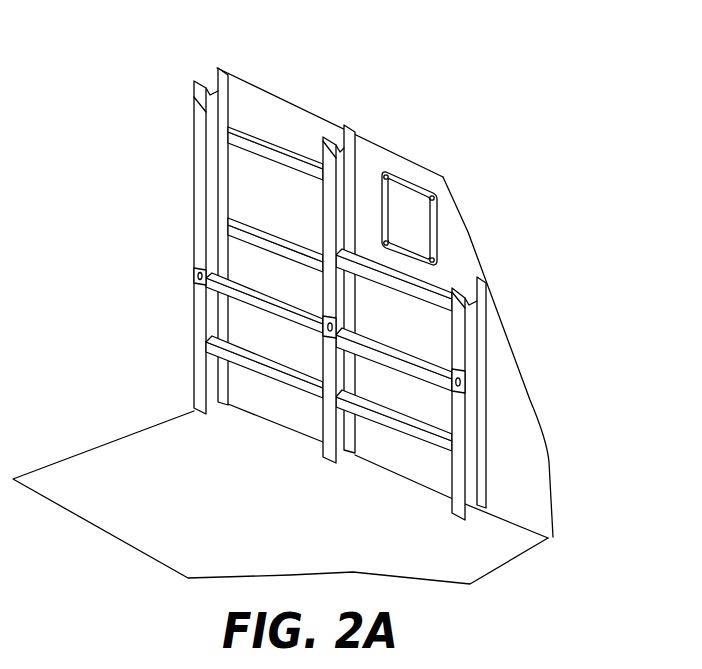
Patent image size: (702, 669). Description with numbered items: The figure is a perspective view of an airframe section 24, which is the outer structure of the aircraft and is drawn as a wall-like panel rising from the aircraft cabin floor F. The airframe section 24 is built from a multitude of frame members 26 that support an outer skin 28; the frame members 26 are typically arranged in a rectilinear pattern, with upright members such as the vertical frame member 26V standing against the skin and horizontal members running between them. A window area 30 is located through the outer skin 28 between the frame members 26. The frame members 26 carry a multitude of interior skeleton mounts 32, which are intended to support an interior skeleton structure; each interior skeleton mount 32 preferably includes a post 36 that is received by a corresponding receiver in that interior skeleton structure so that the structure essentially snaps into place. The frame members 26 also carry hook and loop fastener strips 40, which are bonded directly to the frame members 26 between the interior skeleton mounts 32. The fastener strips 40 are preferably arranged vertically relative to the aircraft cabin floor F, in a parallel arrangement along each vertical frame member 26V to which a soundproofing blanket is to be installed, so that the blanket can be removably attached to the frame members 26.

The airframe section 24 is at (327, 290).
The frame member 26 is at (167, 232).
The vertical frame member 26V is at (343, 157).
The outer skin 28 is at (285, 113).
The window area 30 is at (431, 196).
The interior skeleton mount 32 is at (215, 266).
The post 36 is at (200, 280).
The hook and loop fastener strip 40 is at (195, 152).
The aircraft cabin floor F is at (160, 443).